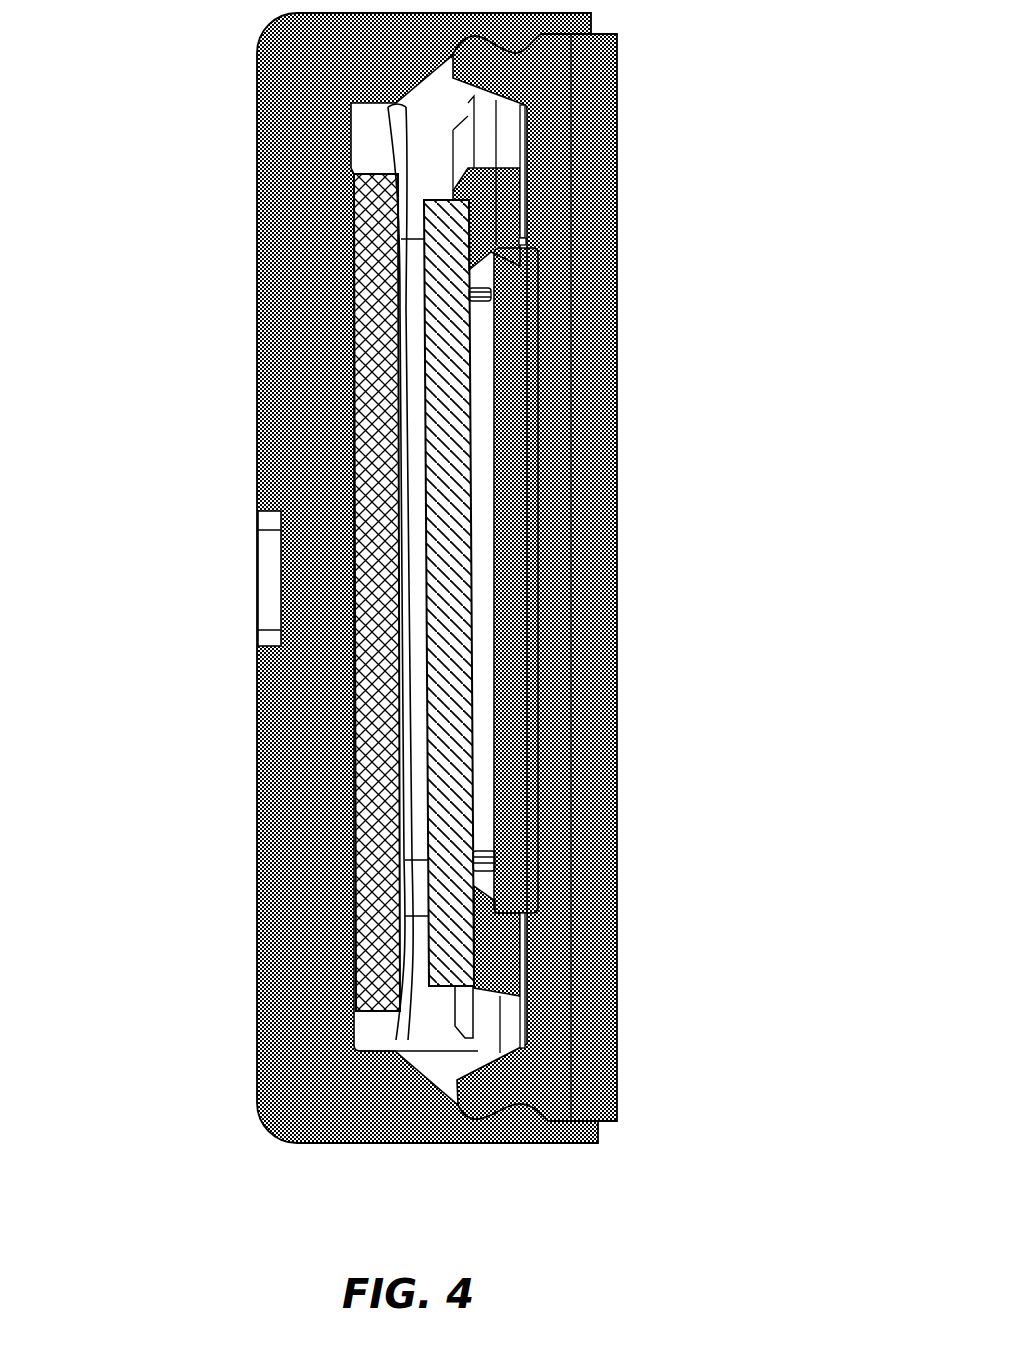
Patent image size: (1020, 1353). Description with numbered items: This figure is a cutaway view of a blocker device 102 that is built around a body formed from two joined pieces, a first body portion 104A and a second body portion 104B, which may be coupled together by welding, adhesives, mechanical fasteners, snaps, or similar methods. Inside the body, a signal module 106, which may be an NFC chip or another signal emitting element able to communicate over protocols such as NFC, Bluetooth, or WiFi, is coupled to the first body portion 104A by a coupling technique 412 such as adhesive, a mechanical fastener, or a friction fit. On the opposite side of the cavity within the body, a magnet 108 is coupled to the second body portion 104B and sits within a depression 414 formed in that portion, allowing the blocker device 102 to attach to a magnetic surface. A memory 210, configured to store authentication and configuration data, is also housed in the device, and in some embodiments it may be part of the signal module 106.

The blocker device 102 is at (447, 578).
The first body portion 104A is at (268, 298).
The second body portion 104B is at (585, 568).
The signal module 106 is at (365, 202).
The magnet 108 is at (507, 472).
The memory 210 is at (423, 745).
The coupling technique 412 is at (347, 465).
The depression 414 is at (490, 237).